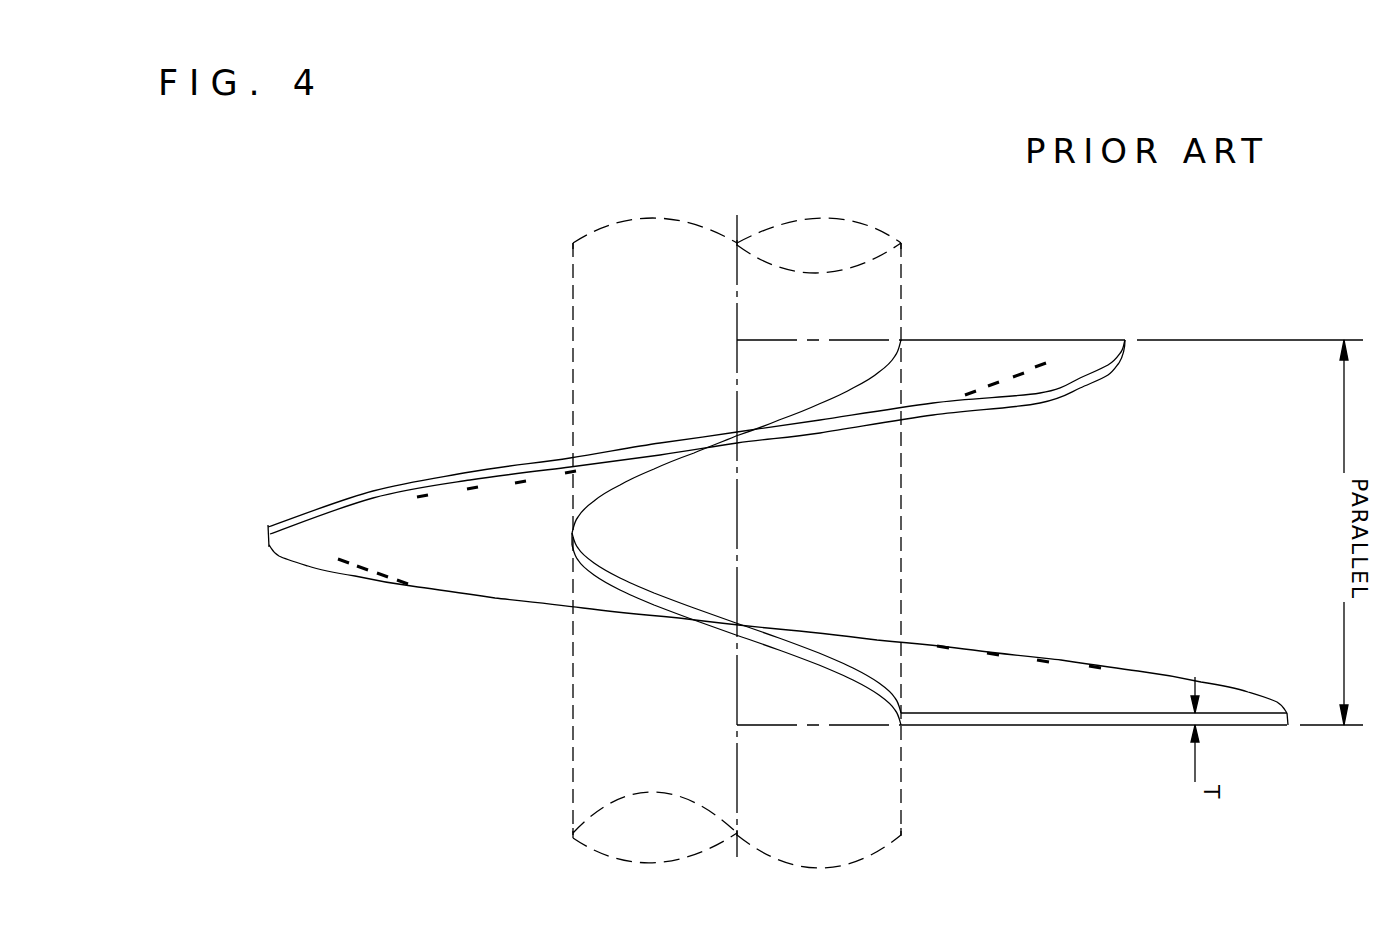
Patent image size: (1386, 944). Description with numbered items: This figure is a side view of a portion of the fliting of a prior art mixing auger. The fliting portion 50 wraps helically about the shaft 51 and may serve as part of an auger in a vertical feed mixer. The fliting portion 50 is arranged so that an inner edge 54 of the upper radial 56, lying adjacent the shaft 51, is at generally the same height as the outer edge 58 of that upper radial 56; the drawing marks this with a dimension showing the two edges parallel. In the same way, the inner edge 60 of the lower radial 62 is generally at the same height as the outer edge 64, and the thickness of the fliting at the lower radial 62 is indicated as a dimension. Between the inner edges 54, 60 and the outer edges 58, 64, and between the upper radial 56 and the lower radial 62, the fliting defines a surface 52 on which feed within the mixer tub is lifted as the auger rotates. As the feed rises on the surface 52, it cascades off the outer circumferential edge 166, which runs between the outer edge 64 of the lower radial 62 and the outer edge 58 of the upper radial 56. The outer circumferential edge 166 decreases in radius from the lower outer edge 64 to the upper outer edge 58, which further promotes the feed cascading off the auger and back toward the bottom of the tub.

The fliting portion 50 is at (488, 415).
The shaft 51 is at (635, 322).
The surface 52 is at (958, 692).
The inner edge of upper radial 54 is at (901, 338).
The upper radial 56 is at (997, 338).
The outer edge of upper radial 58 is at (1125, 338).
The inner edge of lower radial 60 is at (905, 725).
The lower radial 62 is at (1042, 723).
The outer edge of lower radial 64 is at (1287, 717).
The outer circumferential edge 166 is at (372, 492).